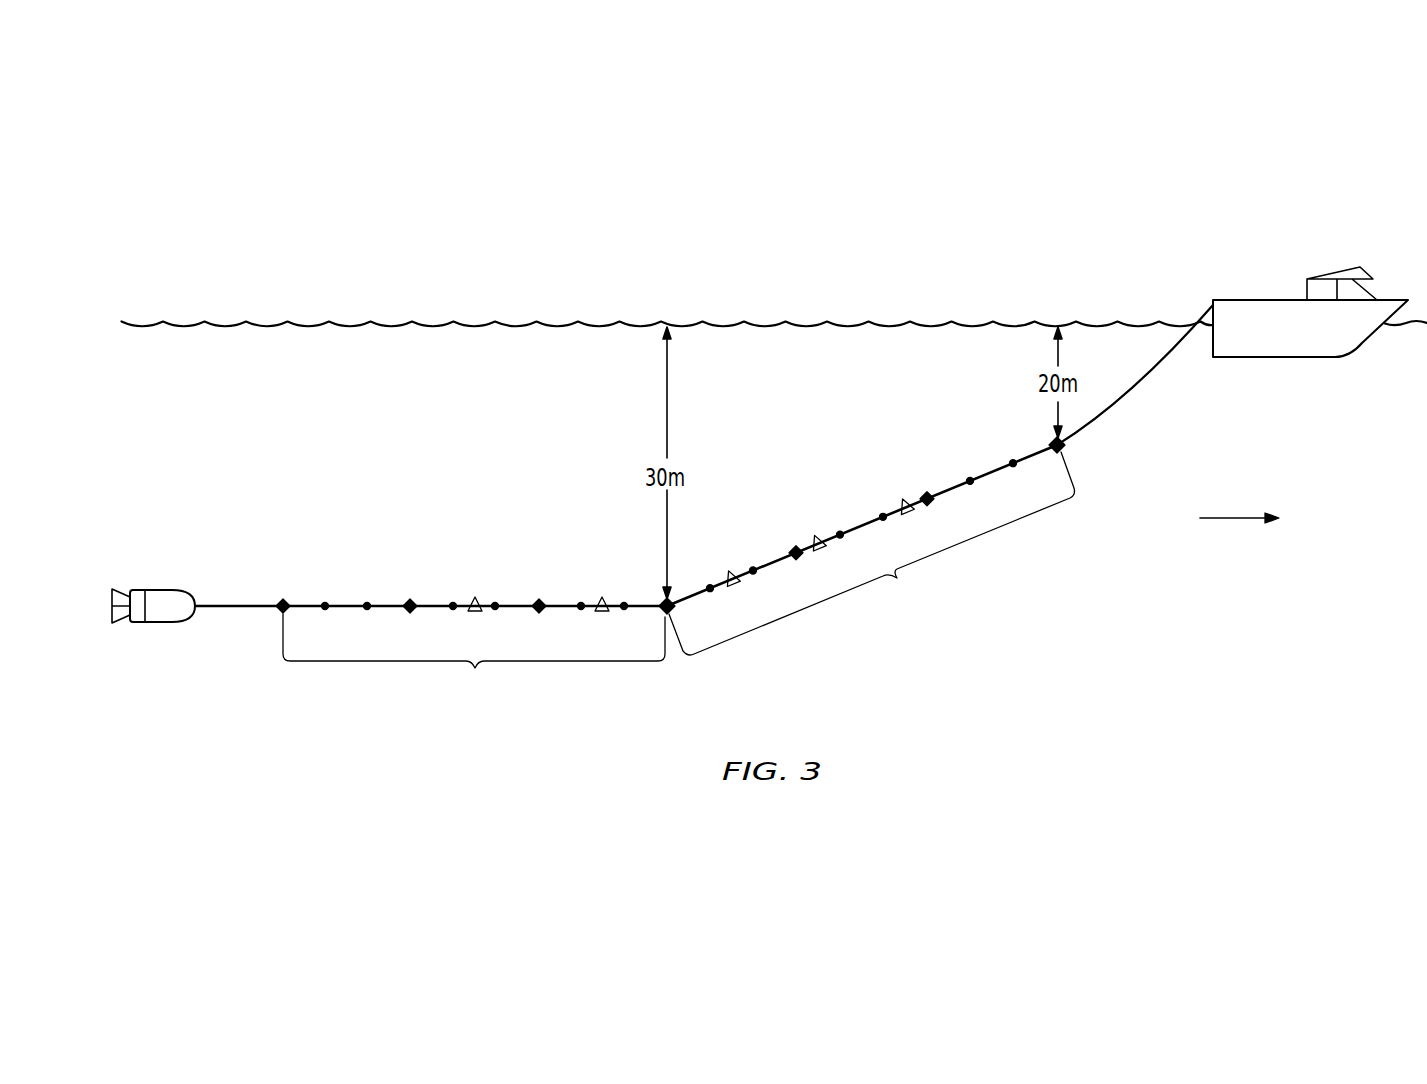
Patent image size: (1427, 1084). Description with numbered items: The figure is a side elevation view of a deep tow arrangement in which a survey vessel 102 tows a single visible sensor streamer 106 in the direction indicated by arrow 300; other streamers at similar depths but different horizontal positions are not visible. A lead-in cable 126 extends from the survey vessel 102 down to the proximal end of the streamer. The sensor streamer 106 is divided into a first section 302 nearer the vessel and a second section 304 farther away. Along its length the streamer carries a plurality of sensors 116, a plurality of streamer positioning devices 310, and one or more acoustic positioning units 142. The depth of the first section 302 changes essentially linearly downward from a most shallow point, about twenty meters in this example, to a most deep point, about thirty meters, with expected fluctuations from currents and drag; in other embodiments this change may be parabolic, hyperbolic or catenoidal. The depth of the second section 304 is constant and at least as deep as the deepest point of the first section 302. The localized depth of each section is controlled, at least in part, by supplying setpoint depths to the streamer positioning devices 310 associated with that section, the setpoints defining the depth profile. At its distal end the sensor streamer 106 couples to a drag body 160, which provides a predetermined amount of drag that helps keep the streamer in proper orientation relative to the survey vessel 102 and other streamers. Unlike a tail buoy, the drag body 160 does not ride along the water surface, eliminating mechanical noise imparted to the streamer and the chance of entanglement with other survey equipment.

The survey vessel 102 is at (1250, 299).
The sensor streamer 106 is at (862, 525).
The sensors 116 is at (623, 602).
The lead-in cable 126 is at (1134, 388).
The acoustic positioning units 142 is at (601, 613).
The drag body 160 is at (160, 590).
The arrow 300 is at (1243, 520).
The first section 302 is at (897, 578).
The second section 304 is at (475, 668).
The streamer positioning devices 310 is at (290, 604).